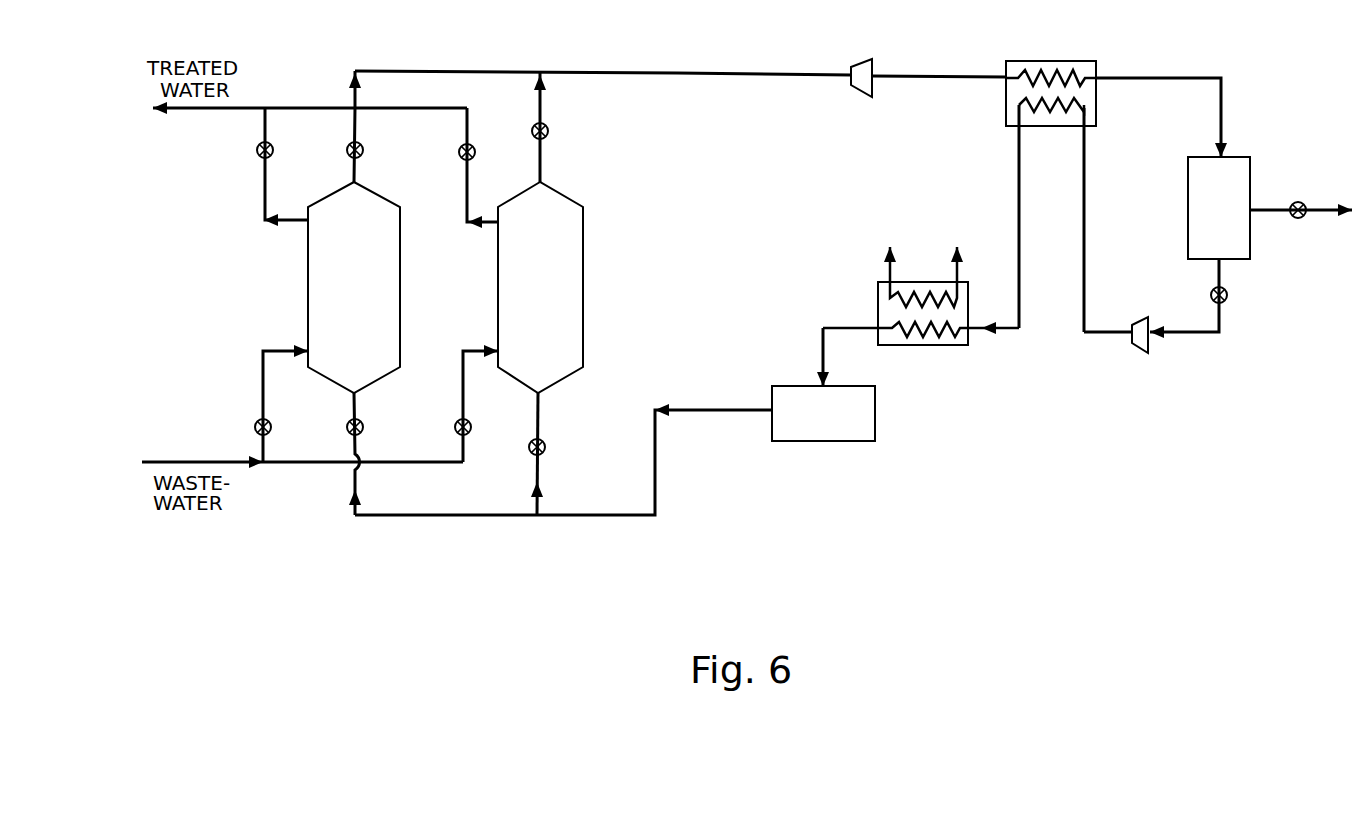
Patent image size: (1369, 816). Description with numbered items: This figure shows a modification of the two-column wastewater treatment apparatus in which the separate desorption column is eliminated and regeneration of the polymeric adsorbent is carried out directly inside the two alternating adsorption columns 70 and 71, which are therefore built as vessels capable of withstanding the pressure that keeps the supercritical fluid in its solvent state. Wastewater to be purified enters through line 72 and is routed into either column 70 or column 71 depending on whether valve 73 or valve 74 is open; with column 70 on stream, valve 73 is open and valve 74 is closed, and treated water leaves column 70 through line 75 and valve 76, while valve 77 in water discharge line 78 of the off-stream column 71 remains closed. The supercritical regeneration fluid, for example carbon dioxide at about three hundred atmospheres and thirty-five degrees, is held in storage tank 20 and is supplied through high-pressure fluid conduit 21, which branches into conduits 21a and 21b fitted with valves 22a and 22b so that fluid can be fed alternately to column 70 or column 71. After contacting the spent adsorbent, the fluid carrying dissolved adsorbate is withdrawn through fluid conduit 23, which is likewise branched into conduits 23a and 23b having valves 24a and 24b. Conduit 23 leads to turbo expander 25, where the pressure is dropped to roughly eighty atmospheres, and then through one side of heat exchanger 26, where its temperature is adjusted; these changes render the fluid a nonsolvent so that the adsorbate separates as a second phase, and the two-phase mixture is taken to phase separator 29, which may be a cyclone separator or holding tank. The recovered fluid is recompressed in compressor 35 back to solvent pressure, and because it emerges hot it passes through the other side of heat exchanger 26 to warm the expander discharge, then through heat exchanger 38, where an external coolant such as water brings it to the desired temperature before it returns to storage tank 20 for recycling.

The storage tank 20 is at (808, 435).
The high-pressure line 21 is at (702, 412).
The conduit 21a is at (358, 403).
The conduit 21b is at (541, 405).
The valve 22a is at (362, 430).
The valve 22b is at (544, 450).
The high-pressure line 23 is at (677, 72).
The conduit 23a is at (360, 167).
The conduit 23b is at (542, 165).
The valve 24a is at (362, 143).
The valve 24b is at (545, 125).
The turbo expander 25 is at (863, 60).
The heat exchanger 26 is at (1030, 63).
The phase separator 29 is at (1240, 180).
The compressor 35 is at (1142, 340).
The heat exchanger 38 is at (918, 343).
The adsorption column 70 is at (373, 297).
The adsorption column 71 is at (553, 297).
The line 72 is at (303, 465).
The valve 73 is at (255, 420).
The valve 74 is at (473, 420).
The line 75 is at (263, 188).
The valve 76 is at (256, 150).
The valve 77 is at (470, 147).
The water discharge line 78 is at (468, 180).